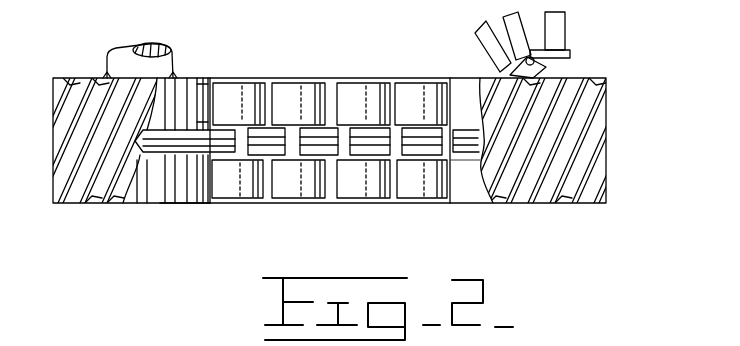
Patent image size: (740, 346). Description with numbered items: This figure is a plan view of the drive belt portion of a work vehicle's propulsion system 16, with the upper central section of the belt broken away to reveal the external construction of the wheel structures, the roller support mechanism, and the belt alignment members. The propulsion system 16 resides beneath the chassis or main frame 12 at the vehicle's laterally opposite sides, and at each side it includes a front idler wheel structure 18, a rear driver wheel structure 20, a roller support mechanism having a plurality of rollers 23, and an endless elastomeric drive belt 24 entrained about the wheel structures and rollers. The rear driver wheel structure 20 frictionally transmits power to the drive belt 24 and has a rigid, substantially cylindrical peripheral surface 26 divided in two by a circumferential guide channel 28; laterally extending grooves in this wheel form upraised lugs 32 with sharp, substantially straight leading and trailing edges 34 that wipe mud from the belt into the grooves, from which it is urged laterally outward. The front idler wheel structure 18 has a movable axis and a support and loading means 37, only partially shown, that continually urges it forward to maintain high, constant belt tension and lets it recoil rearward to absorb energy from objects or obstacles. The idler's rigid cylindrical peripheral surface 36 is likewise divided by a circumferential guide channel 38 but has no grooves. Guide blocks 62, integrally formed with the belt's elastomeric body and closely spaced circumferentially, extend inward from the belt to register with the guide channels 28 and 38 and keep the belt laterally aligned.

The chassis or main frame 12 is at (120, 63).
The propulsion system 16 is at (540, 208).
The front idler wheel structure 18 is at (458, 205).
The rear driver wheel structure 20 is at (180, 203).
The rollers 23 is at (357, 97).
The endless elastomeric drive belt 24 is at (594, 104).
The peripheral surface 26 is at (155, 193).
The circumferential guide channel 28 is at (187, 142).
The upraised lugs 32 is at (182, 87).
The leading and trailing edges 34 is at (193, 87).
The peripheral surface 36 is at (465, 95).
The support and loading means 37 is at (568, 33).
The circumferential guide channel 38 is at (477, 140).
The lateral alignment members or guide blocks 62 is at (318, 143).